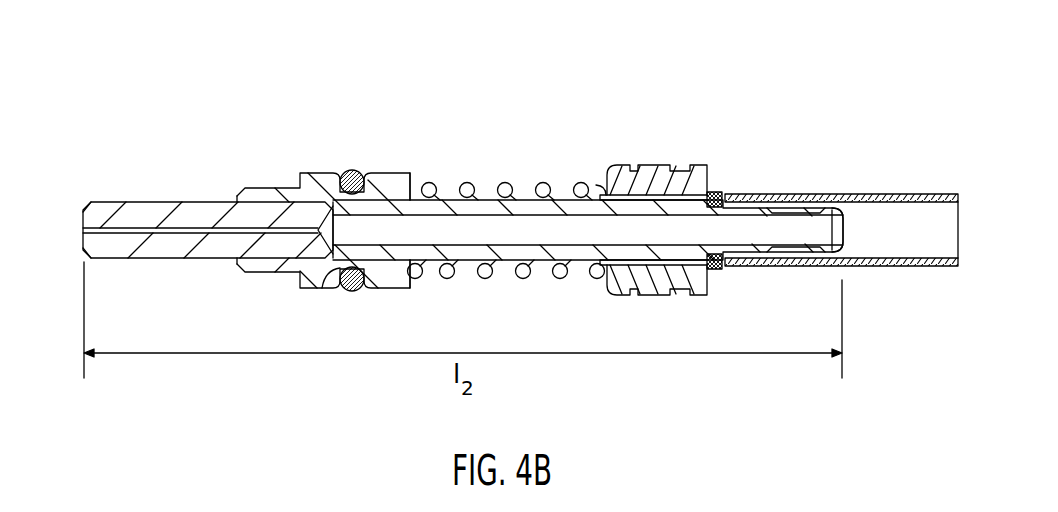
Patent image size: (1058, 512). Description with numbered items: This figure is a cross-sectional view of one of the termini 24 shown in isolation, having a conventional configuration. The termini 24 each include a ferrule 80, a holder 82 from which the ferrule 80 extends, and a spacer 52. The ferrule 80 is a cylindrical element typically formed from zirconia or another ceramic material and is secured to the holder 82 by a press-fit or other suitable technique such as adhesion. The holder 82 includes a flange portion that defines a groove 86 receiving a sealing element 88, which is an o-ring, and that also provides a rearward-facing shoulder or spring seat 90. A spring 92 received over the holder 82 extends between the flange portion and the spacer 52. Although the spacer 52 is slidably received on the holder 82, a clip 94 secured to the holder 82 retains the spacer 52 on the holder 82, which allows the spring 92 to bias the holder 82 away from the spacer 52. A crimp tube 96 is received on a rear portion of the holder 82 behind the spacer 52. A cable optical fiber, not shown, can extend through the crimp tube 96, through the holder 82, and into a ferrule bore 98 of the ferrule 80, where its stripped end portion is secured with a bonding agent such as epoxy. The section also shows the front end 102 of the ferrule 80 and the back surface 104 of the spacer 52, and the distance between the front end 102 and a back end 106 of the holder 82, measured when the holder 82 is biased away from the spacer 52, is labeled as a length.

The termini 24 is at (198, 108).
The spacer 52 is at (657, 167).
The ferrule 80 is at (158, 192).
The holder 82 is at (318, 162).
The groove 86 is at (333, 273).
The sealing element 88 is at (364, 174).
The spring seat 90 is at (412, 176).
The spring 92 is at (505, 183).
The clip 94 is at (716, 190).
The crimp tube 96 is at (868, 194).
The ferrule bore 98 is at (132, 236).
The front end 102 is at (83, 220).
The back surface 104 is at (707, 190).
The back end 106 is at (846, 248).